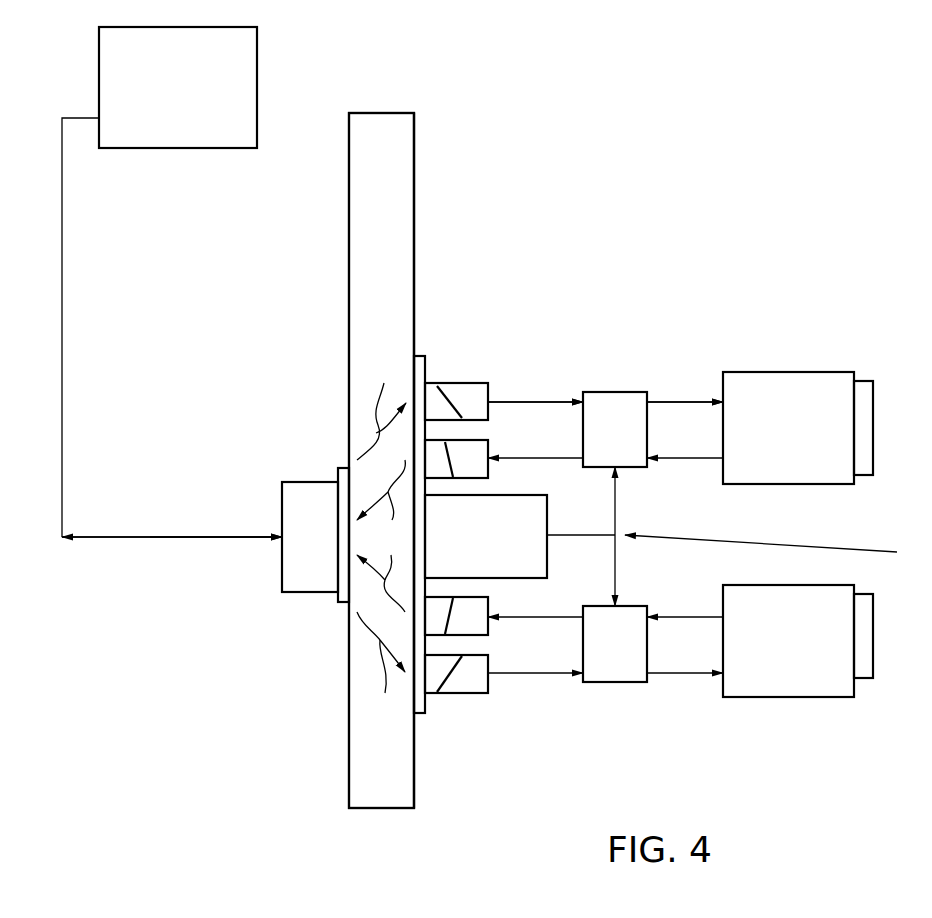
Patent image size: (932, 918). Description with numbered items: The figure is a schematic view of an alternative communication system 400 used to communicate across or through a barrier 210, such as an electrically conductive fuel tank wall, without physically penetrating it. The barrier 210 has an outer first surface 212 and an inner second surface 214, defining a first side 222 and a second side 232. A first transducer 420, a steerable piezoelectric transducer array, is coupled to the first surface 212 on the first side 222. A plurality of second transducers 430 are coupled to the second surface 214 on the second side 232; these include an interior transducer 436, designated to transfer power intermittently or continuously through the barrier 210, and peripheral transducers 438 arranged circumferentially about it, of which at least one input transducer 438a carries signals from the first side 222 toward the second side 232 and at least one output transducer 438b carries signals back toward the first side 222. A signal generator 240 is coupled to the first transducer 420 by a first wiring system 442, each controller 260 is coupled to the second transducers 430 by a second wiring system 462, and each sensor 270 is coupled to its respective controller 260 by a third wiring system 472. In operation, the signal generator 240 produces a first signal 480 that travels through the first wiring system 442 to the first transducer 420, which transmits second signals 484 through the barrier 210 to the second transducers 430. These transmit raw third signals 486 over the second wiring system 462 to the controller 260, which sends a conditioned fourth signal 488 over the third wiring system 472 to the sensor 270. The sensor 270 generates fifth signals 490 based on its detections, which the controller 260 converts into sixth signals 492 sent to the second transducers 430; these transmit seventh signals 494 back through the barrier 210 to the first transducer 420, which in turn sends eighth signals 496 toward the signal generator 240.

The barrier 210 is at (395, 790).
The first surface 212 is at (347, 790).
The second surface 214 is at (418, 767).
The first side 222 is at (158, 724).
The second side 232 is at (595, 763).
The signal generator 240 is at (196, 135).
The controller 260 is at (615, 392).
The sensor 270 is at (826, 388).
The communication system 400 is at (745, 770).
The first transducer 420 is at (298, 594).
The second transducers 430 is at (457, 690).
The interior transducer 436 is at (525, 568).
The peripheral transducers 438 is at (477, 606).
The input transducer 438a is at (472, 393).
The output transducer 438b is at (468, 466).
The first wiring system 442 is at (143, 540).
The second wiring system 462 is at (530, 400).
The third wiring system 472 is at (703, 400).
The first signal 480 is at (247, 540).
The second signals 484 is at (384, 536).
The third signals 486 is at (540, 405).
The fourth signal 488 is at (695, 405).
The fifth signals 490 is at (683, 461).
The sixth signals 492 is at (576, 461).
The seventh signals 494 is at (388, 567).
The eighth signals 496 is at (88, 536).